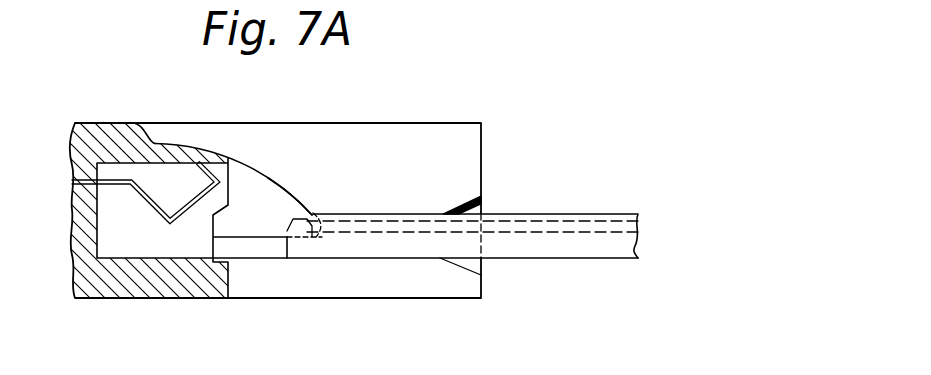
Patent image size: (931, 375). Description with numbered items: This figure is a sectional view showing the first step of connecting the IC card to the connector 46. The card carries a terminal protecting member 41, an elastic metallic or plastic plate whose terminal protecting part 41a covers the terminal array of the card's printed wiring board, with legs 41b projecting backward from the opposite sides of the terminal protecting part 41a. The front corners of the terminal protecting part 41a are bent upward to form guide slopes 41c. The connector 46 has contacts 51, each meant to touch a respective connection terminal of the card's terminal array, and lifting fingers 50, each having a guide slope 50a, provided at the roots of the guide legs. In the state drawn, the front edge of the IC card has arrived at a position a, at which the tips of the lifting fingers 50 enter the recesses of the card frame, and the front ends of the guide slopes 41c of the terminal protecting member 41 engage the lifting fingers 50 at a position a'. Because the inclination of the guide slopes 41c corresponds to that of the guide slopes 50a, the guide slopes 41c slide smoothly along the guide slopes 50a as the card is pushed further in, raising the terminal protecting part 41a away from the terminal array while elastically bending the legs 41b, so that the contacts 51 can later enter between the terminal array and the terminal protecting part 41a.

The connector 46 is at (97, 122).
The lifting finger 50 is at (268, 186).
The guide slope 50a is at (287, 192).
The contact 51 is at (152, 190).
The position a is at (273, 293).
The position a' is at (364, 143).
The terminal protecting member 41 is at (418, 214).
The terminal protecting part 41a is at (374, 216).
The leg 41b is at (483, 203).
The guide slope 41c is at (323, 234).